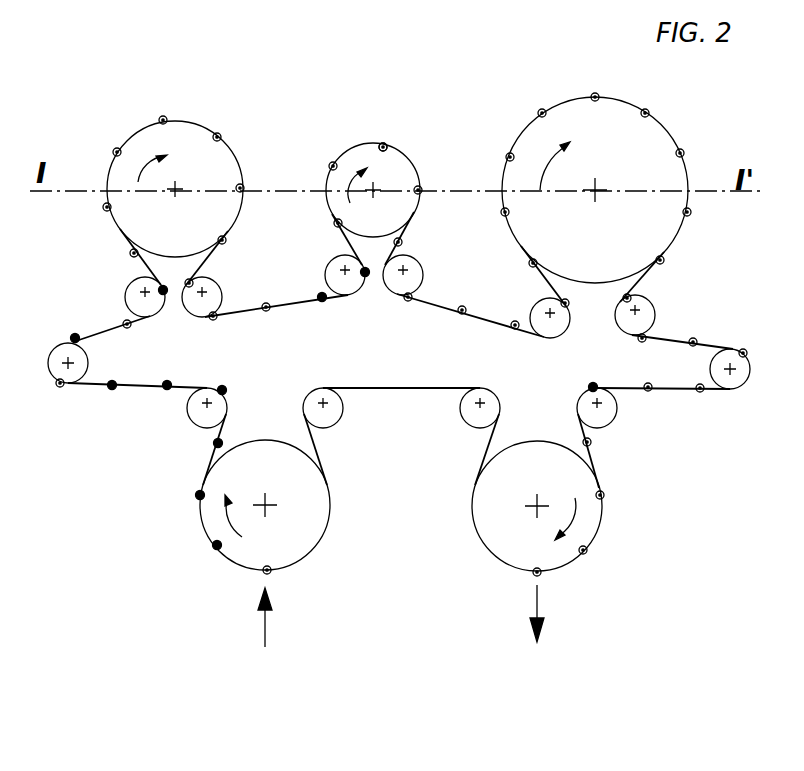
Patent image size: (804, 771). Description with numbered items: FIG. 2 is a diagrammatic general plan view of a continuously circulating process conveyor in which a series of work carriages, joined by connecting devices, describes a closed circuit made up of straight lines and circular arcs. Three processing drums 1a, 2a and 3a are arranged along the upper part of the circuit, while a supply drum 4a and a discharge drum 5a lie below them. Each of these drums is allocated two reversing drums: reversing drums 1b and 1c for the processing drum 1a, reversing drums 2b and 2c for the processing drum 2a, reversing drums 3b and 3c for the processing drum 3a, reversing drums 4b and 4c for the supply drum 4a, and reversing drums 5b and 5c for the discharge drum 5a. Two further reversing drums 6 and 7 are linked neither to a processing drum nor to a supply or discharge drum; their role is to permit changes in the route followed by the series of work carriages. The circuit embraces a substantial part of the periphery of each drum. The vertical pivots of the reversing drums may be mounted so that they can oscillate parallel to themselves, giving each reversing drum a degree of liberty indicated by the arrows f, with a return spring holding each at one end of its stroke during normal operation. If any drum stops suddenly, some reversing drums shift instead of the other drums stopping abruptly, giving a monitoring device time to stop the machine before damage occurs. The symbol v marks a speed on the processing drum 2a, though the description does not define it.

The processing drum 1a is at (175, 189).
The reversing drum 1b is at (145, 297).
The reversing drum 1c is at (202, 297).
The processing drum 2a is at (373, 190).
The reversing drum 2b is at (345, 275).
The reversing drum 2c is at (403, 275).
The processing drum 3a is at (595, 190).
The reversing drum 3b is at (550, 318).
The reversing drum 3c is at (635, 315).
The supply drum 4a is at (265, 505).
The reversing drum 4b is at (323, 408).
The reversing drum 4c is at (207, 408).
The discharge drum 5a is at (537, 506).
The reversing drum 5b is at (597, 408).
The reversing drum 5c is at (480, 409).
The reversing drum 6 is at (80, 364).
The reversing drum 7 is at (714, 368).
The peripheral speed v is at (385, 145).
The arrows indicating degree of liberty f is at (83, 255).